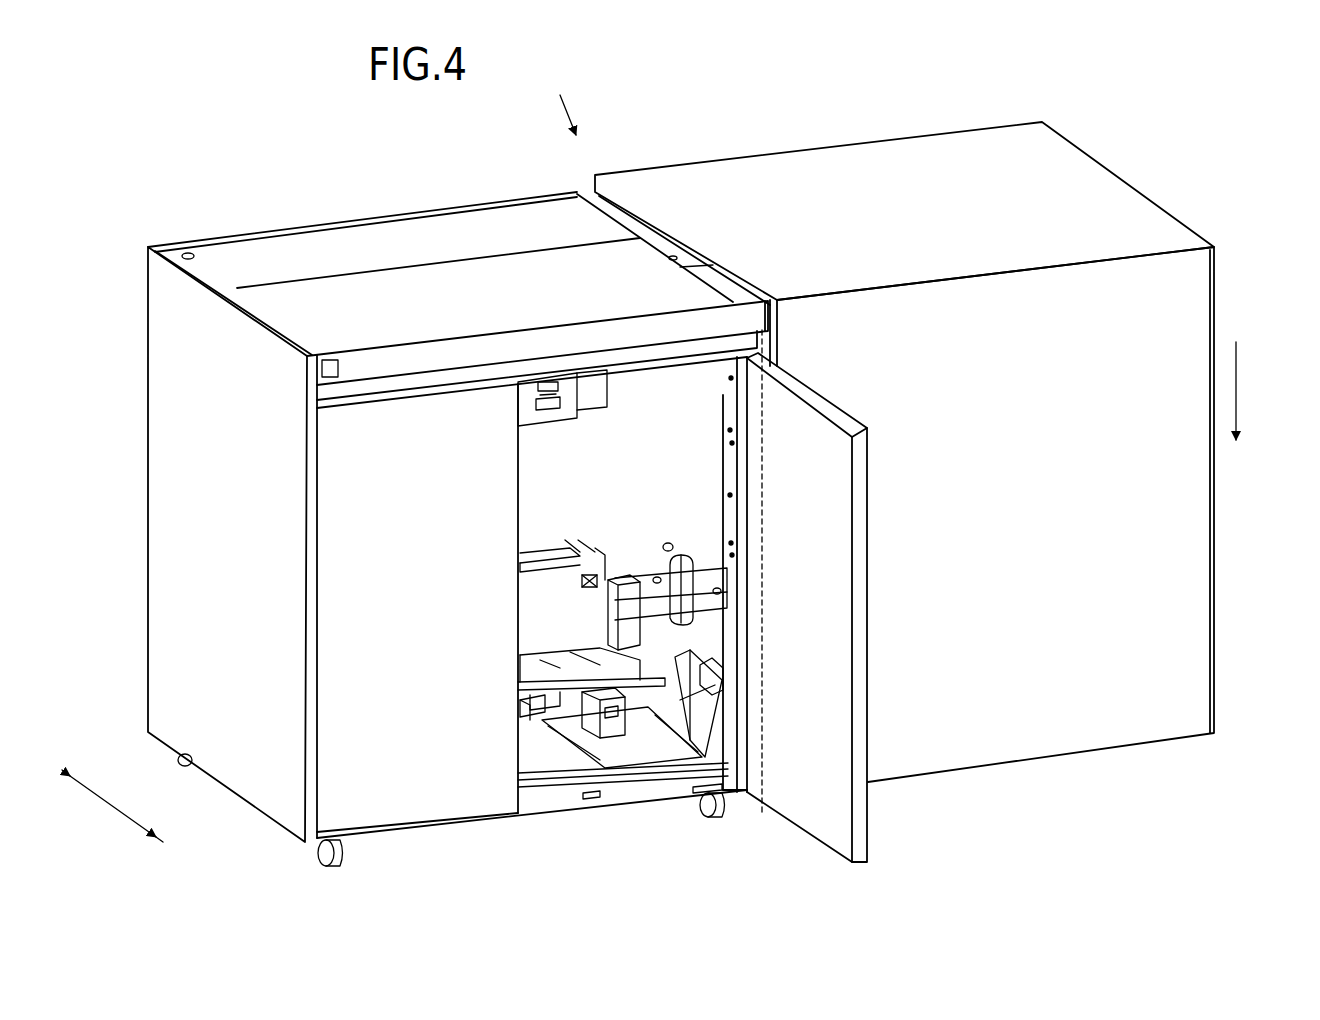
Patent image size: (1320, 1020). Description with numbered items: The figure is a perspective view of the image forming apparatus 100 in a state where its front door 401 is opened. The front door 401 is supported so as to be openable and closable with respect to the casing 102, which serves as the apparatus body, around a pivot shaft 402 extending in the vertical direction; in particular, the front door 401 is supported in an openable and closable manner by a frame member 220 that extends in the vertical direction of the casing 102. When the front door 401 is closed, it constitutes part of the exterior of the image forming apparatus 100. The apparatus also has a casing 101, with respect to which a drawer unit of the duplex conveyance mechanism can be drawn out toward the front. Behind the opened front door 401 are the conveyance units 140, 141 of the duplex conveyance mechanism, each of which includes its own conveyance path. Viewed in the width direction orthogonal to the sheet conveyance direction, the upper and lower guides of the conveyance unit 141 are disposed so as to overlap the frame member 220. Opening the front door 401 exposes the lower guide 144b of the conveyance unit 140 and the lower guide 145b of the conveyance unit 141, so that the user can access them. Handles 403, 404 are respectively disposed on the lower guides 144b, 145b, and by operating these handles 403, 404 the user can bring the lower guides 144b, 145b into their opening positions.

The image forming apparatus 100 is at (1156, 165).
The casing 101 is at (1136, 692).
The casing 102 is at (247, 733).
The conveyance unit 140 is at (508, 692).
The conveyance unit 141 is at (680, 720).
The lower guide 144b is at (540, 730).
The lower guide 145b is at (730, 650).
The frame member 220 is at (723, 395).
The front door 401 is at (857, 820).
The pivot shaft 402 is at (765, 392).
The handle 403 is at (623, 730).
The handle 404 is at (708, 730).